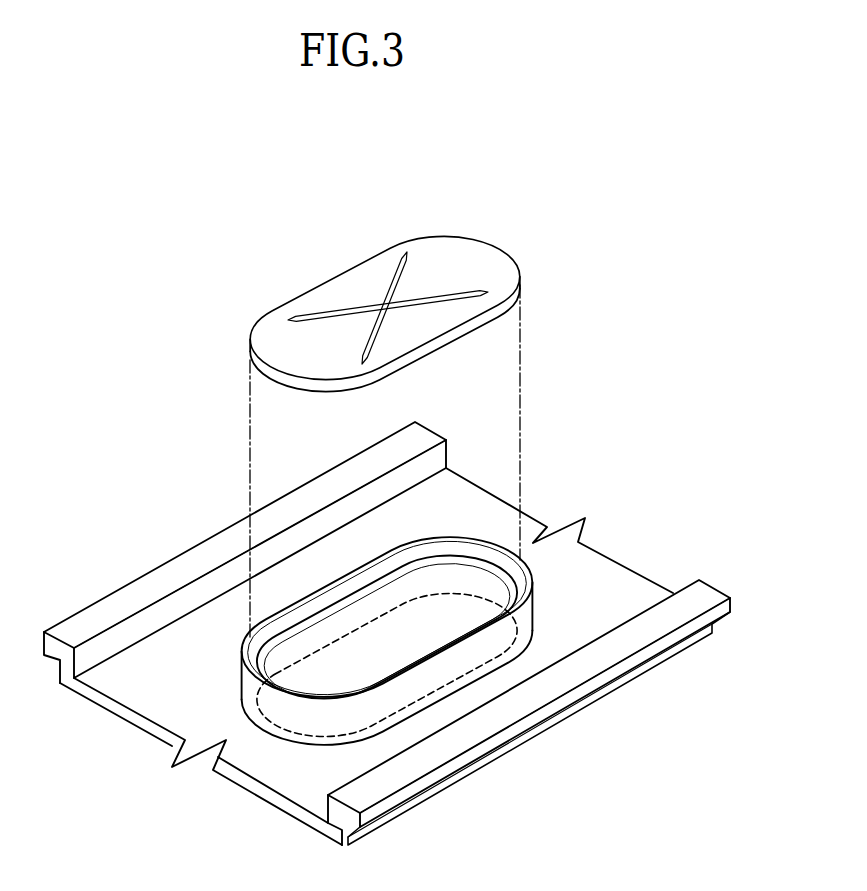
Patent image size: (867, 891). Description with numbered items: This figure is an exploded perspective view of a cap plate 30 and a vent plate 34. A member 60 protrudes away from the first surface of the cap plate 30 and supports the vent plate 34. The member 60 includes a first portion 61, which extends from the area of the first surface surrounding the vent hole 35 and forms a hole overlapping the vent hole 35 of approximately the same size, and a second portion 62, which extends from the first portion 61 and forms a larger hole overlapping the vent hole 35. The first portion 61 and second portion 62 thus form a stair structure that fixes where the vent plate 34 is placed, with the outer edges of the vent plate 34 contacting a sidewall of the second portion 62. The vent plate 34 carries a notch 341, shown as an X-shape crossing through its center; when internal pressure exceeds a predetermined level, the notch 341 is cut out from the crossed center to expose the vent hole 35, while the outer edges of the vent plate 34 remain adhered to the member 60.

The cap plate 30 is at (592, 573).
The vent plate 34 is at (503, 263).
The notch 341 is at (357, 308).
The vent hole 35 is at (292, 675).
The member 60 is at (266, 746).
The first portion 61 is at (322, 632).
The second portion 62 is at (456, 552).